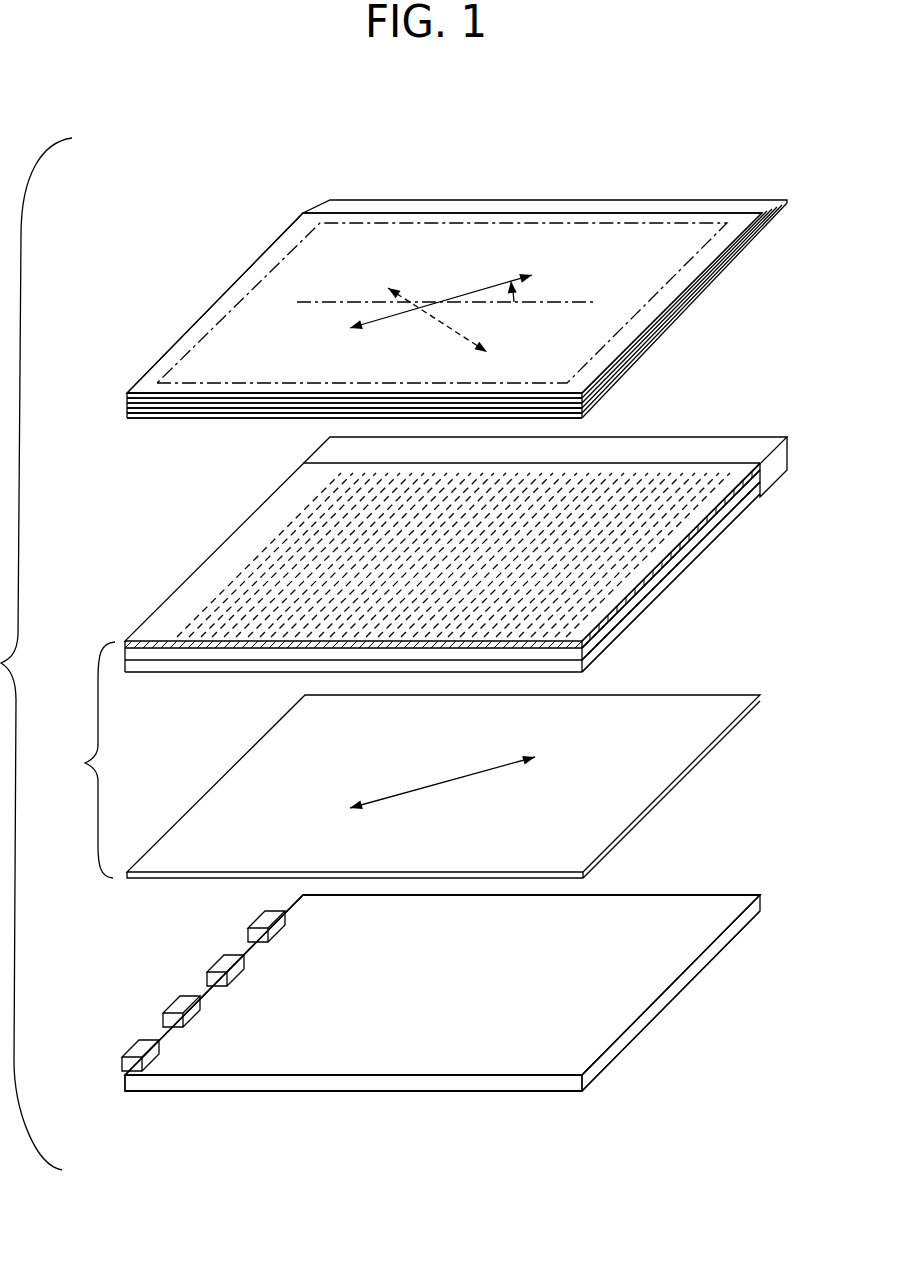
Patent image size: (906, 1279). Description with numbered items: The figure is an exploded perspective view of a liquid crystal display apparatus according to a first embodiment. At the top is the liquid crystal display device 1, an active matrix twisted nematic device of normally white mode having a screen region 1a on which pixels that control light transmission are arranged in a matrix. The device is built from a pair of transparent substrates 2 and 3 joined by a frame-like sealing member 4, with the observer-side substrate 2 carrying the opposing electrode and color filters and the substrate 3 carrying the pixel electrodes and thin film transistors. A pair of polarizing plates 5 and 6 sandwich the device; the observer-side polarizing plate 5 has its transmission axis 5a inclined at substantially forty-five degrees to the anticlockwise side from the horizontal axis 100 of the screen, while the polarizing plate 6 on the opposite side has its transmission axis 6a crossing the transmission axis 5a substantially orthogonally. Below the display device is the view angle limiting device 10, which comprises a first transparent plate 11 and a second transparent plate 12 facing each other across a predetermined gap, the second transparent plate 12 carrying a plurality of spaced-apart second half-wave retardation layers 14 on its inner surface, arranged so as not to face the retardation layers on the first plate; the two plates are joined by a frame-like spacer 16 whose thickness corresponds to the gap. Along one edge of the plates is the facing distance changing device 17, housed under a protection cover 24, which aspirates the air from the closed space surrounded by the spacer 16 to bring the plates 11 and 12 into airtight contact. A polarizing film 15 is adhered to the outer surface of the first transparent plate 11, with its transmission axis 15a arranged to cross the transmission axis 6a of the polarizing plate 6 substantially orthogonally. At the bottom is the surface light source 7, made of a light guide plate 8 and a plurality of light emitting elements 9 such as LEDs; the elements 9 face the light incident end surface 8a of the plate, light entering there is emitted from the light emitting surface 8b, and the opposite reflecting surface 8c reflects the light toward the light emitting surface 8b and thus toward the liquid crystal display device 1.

The liquid crystal display device 1 is at (292, 214).
The screen region 1a is at (614, 240).
The transparent substrate 2 is at (125, 397).
The transparent substrate 3 is at (125, 414).
The sealing member 4 is at (197, 405).
The polarizing plate 5 is at (152, 381).
The transmission axis 5a is at (478, 291).
The polarizing plate 6 is at (148, 416).
The transmission axis 6a is at (440, 322).
The horizontal axis 100 is at (357, 302).
The view angle limiting device 10 is at (81, 760).
The facing distance changing device 17 is at (703, 424).
The protection cover 24 is at (757, 443).
The second ½ retardation layers 14 is at (269, 553).
The second transparent plate 12 is at (700, 515).
The spacer 16 is at (685, 553).
The first transparent plate 11 is at (652, 602).
The polarizing film 15 is at (230, 787).
The transmission axis 15a is at (443, 781).
The surface light source 7 is at (325, 1108).
The light guide plate 8 is at (660, 1007).
The light incident end surface 8a is at (125, 1082).
The light emitting surface 8b is at (695, 897).
The reflecting surface 8c is at (513, 1093).
The light emitting elements 9 is at (247, 937).